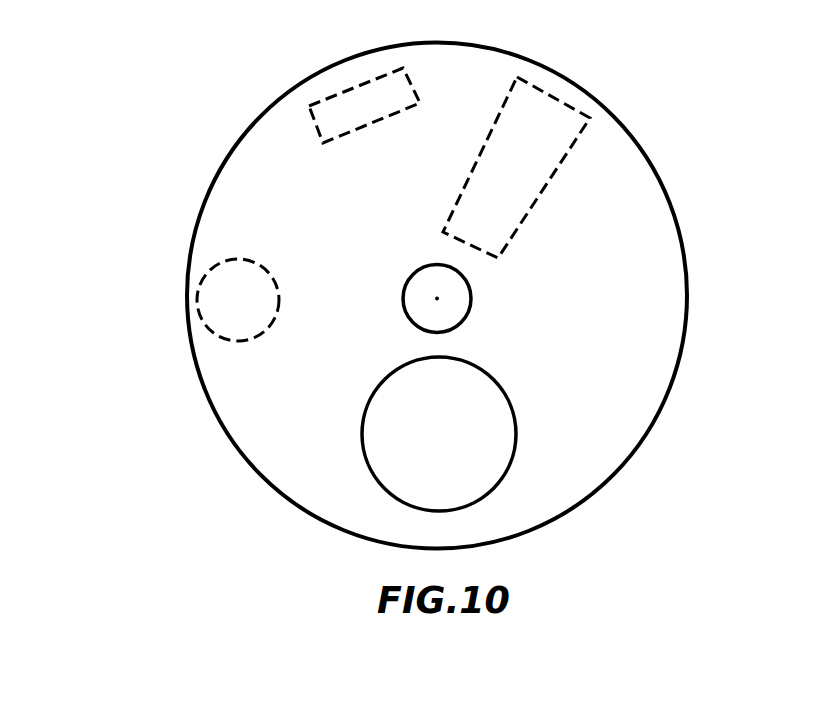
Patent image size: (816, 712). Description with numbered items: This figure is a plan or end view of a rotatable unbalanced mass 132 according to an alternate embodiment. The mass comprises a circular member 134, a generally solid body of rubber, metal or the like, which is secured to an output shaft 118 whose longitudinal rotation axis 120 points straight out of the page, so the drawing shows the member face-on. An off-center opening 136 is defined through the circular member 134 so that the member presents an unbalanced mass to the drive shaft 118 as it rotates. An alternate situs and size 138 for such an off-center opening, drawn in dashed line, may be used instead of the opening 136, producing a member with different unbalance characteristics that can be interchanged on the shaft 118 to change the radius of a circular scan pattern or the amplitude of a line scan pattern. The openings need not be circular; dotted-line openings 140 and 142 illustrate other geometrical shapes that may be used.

The output shaft 118 is at (462, 320).
The longitudinal rotation axis 120 is at (435, 298).
The rotatable unbalanced mass 132 is at (172, 133).
The circular member 134 is at (670, 200).
The off-center opening 136 is at (453, 486).
The alternate off-center opening 138 is at (194, 300).
The opening 140 is at (363, 97).
The opening 142 is at (536, 152).